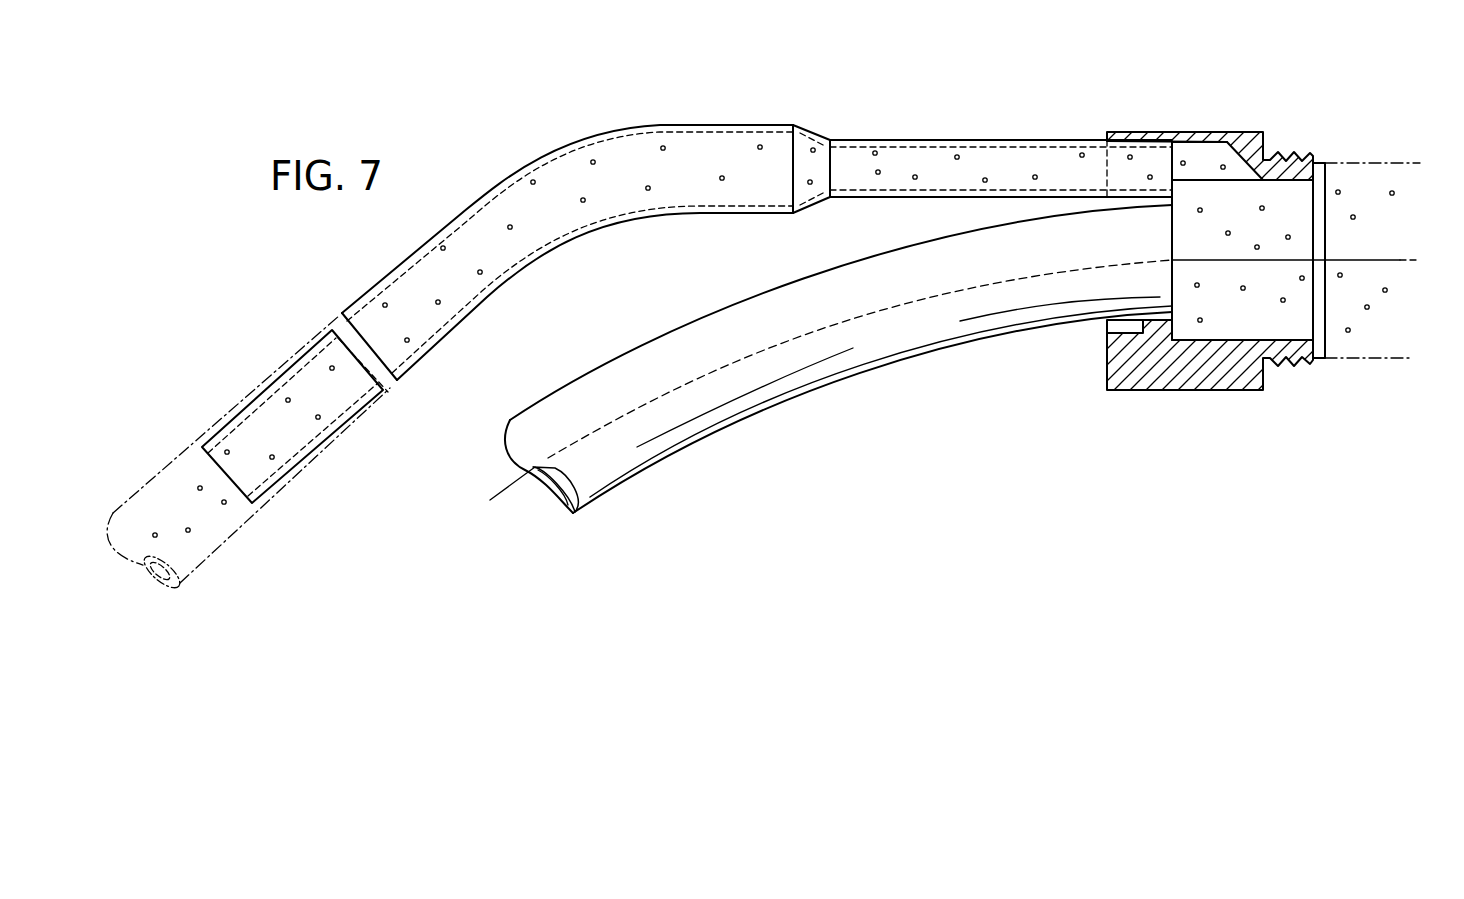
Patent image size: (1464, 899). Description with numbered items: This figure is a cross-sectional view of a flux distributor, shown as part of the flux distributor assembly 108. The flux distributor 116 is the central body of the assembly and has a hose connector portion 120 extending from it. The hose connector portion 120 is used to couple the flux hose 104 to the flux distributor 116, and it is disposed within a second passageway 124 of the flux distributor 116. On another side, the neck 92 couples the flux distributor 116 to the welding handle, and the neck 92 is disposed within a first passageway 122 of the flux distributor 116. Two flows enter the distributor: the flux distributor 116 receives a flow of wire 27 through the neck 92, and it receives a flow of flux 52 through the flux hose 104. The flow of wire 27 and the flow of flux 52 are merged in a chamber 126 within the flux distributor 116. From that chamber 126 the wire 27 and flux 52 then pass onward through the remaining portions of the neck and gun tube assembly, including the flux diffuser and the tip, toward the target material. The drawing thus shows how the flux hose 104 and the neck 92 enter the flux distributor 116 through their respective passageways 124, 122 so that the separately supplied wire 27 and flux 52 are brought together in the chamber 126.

The wire 27 is at (613, 418).
The flux 52 is at (1008, 157).
The neck 92 is at (897, 323).
The flux hose 104 is at (190, 442).
The flux distributor assembly 108 is at (1242, 88).
The flux distributor 116 is at (1253, 131).
The hose connector portion 120 is at (707, 125).
The first passageway 122 is at (1125, 303).
The second passageway 124 is at (1145, 162).
The chamber 126 is at (1257, 217).